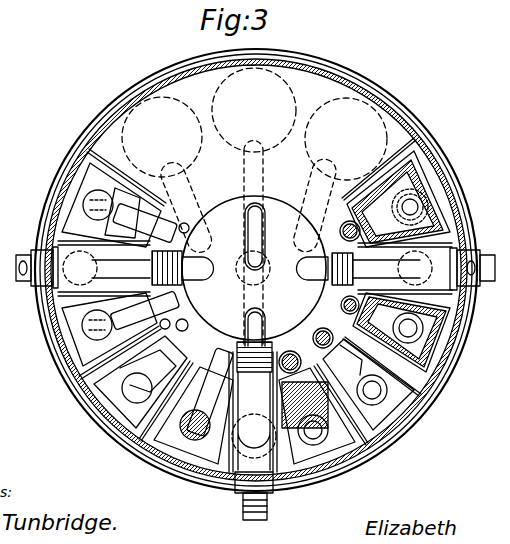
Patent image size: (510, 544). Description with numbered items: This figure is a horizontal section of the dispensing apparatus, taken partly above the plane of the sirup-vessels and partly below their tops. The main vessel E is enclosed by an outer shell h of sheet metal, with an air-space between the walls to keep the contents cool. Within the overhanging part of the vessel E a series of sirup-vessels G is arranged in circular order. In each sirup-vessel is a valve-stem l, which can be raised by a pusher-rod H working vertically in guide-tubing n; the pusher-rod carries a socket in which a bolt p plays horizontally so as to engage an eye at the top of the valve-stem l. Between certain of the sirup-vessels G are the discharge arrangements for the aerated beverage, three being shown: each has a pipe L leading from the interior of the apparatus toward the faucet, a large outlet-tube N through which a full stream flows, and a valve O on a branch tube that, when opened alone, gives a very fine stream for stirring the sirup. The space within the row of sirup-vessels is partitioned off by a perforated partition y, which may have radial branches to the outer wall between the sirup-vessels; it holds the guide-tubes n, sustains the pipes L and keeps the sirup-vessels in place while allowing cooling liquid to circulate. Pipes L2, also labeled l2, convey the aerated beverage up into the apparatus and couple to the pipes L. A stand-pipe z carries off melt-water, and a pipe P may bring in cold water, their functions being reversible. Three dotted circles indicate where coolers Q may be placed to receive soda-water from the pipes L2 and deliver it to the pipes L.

The outer shell h is at (256, 270).
The main vessel E is at (260, 285).
The cooler Q is at (254, 124).
The pipe for conveying the aerated beverage l2 is at (247, 243).
The pipe P is at (254, 268).
The stand-pipe z is at (253, 268).
The pipe for conveying the aerated beverage L2 is at (255, 301).
The valve O is at (255, 383).
The pipe L is at (247, 360).
The outlet-tube N is at (255, 356).
The sirup-vessel G is at (256, 307).
The perforated partition y is at (234, 302).
The bolt p is at (149, 339).
The valve-stem l is at (188, 425).
The pusher-rod H is at (319, 297).
The guide-tubing n is at (234, 293).